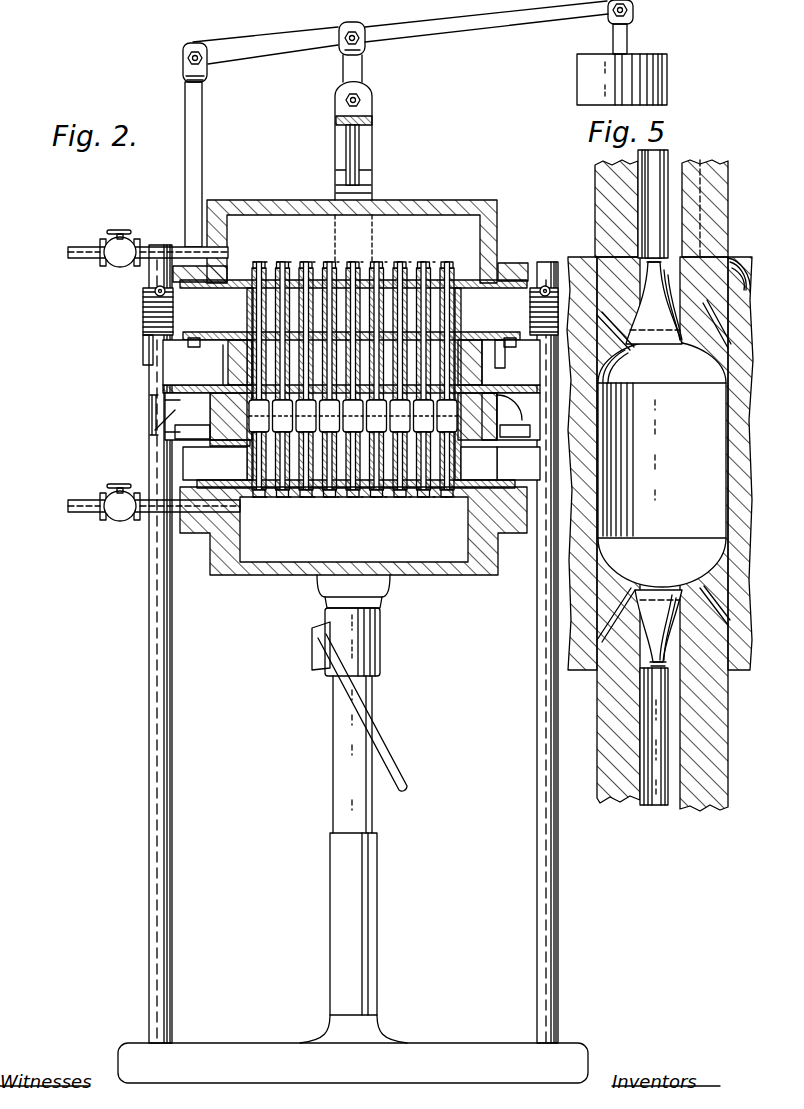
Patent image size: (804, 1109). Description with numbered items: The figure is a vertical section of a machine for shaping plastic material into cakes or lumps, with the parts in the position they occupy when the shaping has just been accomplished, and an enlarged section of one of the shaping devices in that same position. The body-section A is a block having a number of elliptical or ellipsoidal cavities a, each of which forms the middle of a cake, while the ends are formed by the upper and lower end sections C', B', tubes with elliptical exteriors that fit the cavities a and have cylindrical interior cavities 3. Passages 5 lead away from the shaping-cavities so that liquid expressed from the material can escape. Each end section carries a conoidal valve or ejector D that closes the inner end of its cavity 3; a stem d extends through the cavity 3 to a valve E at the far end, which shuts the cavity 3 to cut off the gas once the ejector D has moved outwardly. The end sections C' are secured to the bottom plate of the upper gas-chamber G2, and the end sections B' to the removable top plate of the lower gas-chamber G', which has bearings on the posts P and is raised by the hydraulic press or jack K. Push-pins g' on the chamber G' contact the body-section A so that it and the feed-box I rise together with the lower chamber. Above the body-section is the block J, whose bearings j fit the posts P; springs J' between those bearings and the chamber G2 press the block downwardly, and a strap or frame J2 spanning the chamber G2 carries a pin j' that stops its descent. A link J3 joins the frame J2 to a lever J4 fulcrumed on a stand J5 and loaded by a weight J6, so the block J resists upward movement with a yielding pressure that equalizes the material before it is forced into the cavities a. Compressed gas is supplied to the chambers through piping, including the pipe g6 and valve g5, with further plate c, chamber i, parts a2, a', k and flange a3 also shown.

In FIG. 2, the lever J4 is at (400, 32).
In FIG. 2, the stand J5 is at (178, 145).
In FIG. 2, the link J3 is at (362, 68).
In FIG. 2, the strap or frame J2 is at (362, 172).
In FIG. 2, the pin j' is at (334, 155).
In FIG. 2, the weight J6 is at (626, 46).
In FIG. 2, the gas-chamber G2 is at (350, 227).
In FIG. 2, the supply pipe g6 is at (150, 389).
In FIG. 2, the valve g5 is at (120, 382).
In FIG. 2, the posts P is at (172, 732).
In FIG. 2, the upper plate c is at (353, 271).
In FIG. 2, the block J is at (351, 326).
In FIG. 2, the end section C' is at (346, 384).
In FIG. 5, the end section C' is at (670, 207).
In FIG. 2, the chamber i is at (351, 365).
In FIG. 2, the feed-box I is at (353, 362).
In FIG. 2, the springs J' is at (337, 310).
In FIG. 2, the bearings j is at (321, 351).
In FIG. 2, the valve or ejector D is at (210, 408).
In FIG. 5, the valve or ejector D is at (662, 358).
In FIG. 2, the passage a2 is at (210, 400).
In FIG. 2, the port a' is at (352, 427).
In FIG. 2, the lever k is at (152, 400).
In FIG. 2, the block or body-section A is at (498, 418).
In FIG. 5, the block or body-section A is at (662, 464).
In FIG. 2, the push-pins g' is at (361, 463).
In FIG. 2, the end section B' is at (356, 466).
In FIG. 5, the end section B' is at (660, 534).
In FIG. 2, the stem d is at (280, 262).
In FIG. 5, the stem d is at (668, 158).
In FIG. 2, the cavities a is at (353, 416).
In FIG. 5, the cavities a is at (660, 460).
In FIG. 2, the valve E is at (274, 250).
In FIG. 2, the gas-chamber G' is at (353, 531).
In FIG. 2, the hydraulic press or jack K is at (381, 641).
In FIG. 5, the cylindrical interior cavity 3 is at (700, 165).
In FIG. 5, the passages 5 is at (600, 258).
In FIG. 5, the flange a3 is at (745, 255).